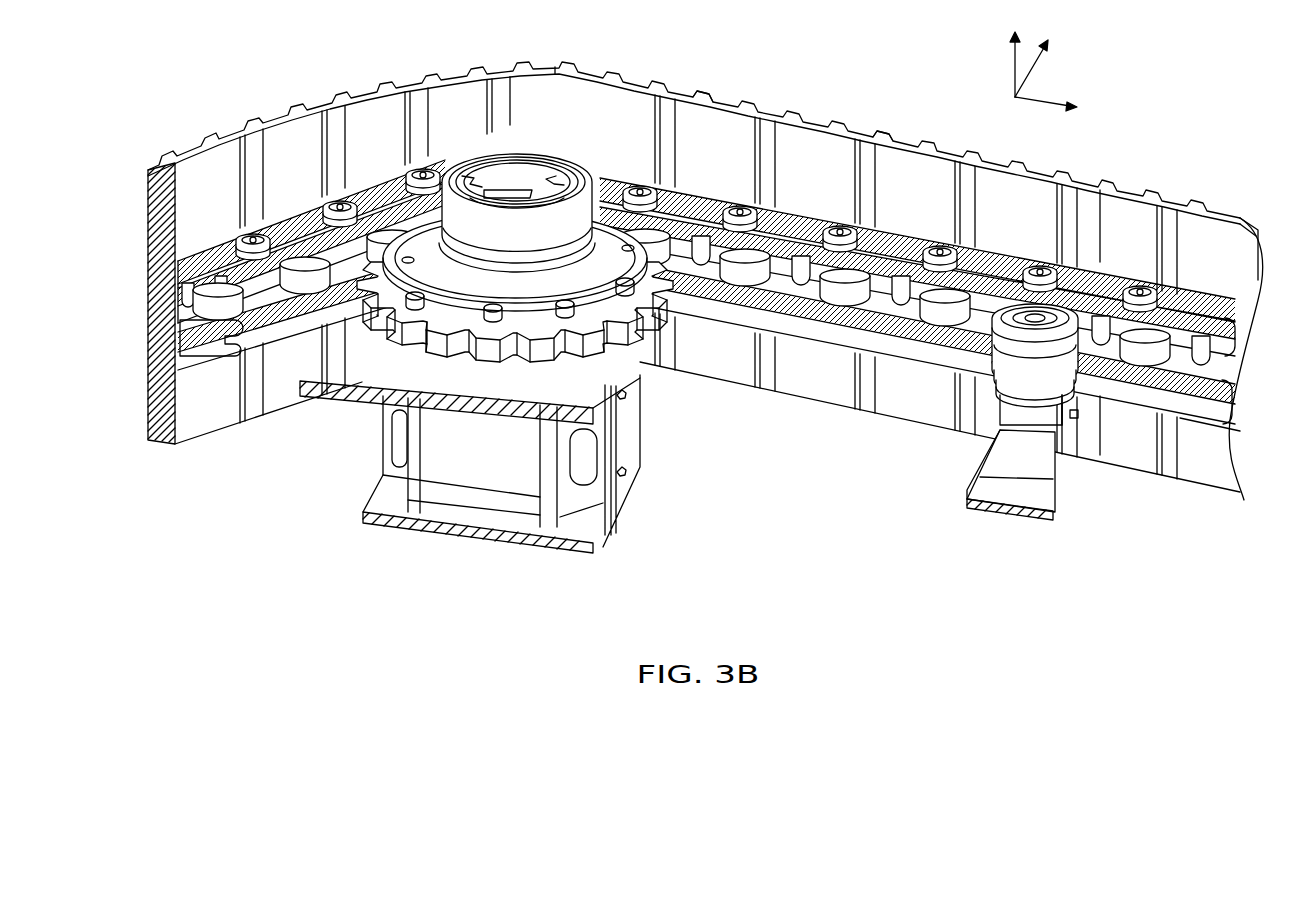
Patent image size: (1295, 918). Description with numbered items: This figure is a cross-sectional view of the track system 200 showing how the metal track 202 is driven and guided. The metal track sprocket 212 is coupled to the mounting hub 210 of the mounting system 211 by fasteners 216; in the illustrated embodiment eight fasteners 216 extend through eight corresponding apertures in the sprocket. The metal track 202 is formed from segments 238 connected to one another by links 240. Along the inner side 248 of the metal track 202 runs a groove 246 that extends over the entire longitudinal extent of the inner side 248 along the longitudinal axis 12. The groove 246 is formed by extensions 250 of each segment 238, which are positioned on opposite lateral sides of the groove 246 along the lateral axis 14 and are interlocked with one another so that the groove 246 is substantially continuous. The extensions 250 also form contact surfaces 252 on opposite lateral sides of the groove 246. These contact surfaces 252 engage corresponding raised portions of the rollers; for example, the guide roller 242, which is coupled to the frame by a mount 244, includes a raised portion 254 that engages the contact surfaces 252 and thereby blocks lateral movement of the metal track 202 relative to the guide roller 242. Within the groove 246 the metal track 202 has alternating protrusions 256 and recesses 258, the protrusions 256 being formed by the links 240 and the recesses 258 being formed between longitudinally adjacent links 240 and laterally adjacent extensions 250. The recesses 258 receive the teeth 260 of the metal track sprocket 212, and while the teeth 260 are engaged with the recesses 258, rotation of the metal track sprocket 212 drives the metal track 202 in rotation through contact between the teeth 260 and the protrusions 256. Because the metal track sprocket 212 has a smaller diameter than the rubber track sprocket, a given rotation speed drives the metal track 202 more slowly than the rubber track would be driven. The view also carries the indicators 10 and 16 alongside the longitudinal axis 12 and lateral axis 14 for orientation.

The conveyance direction 10 is at (1216, 142).
The longitudinal axis 12 is at (1040, 104).
The lateral axis 14 is at (1015, 72).
The longitudinal axis 16 is at (1035, 62).
The track system 200 is at (845, 45).
The metal track 202 is at (1020, 151).
The mounting hub 210 is at (612, 170).
The mounting system 211 is at (495, 156).
The metal track sprocket 212 is at (402, 258).
The fasteners 216 is at (590, 342).
The segments 238 is at (716, 100).
The links 240 is at (770, 215).
The guide roller 242 is at (1104, 262).
The mount 244 is at (1048, 472).
The groove 246 is at (925, 362).
The inner side 248 is at (1157, 480).
The extensions 250 is at (795, 250).
The contact surfaces 252 is at (937, 247).
The raised portion 254 is at (985, 355).
The protrusions 256 is at (728, 275).
The recesses 258 is at (700, 262).
The teeth 260 is at (473, 350).